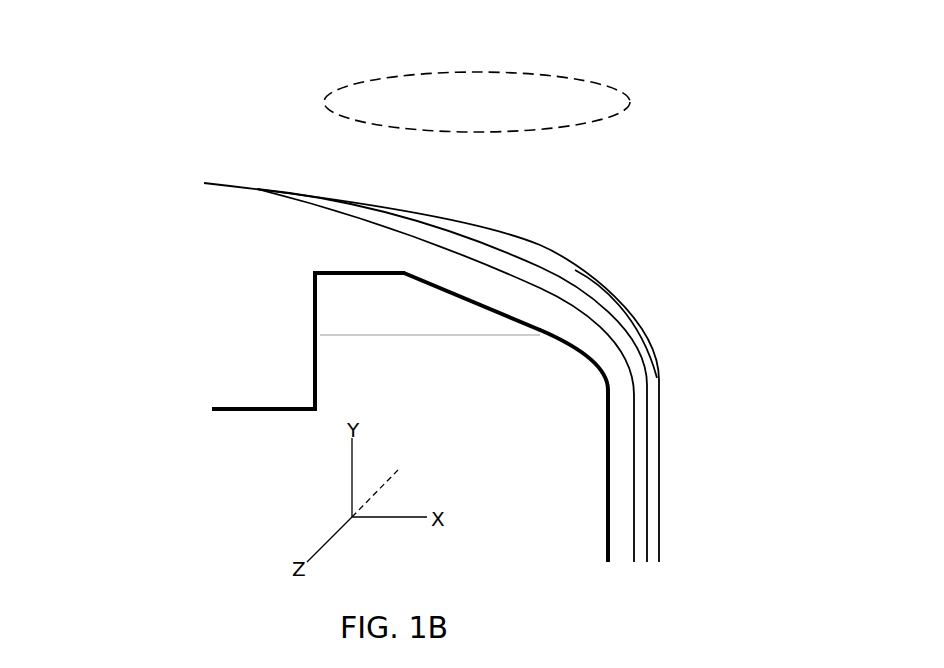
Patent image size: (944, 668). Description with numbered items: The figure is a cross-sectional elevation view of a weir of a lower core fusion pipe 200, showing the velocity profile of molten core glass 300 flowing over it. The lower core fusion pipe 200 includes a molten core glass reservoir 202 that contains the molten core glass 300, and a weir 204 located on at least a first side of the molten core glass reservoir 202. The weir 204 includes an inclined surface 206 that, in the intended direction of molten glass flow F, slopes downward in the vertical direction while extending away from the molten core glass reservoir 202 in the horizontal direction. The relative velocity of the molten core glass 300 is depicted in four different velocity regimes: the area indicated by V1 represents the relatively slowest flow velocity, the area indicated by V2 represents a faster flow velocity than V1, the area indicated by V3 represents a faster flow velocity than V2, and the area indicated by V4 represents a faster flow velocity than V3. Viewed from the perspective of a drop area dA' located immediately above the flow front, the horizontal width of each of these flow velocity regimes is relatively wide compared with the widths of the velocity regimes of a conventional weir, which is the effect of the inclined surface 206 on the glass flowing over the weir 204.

The lower core fusion pipe 200 is at (408, 416).
The molten core glass reservoir 202 is at (258, 411).
The weir 204 is at (517, 522).
The inclined surface 206 is at (488, 310).
The molten core glass 300 is at (406, 349).
The slowest flow velocity regime V1 is at (232, 197).
The second flow velocity regime V2 is at (380, 207).
The third flow velocity regime V3 is at (541, 241).
The fastest flow velocity regime V4 is at (647, 312).
The direction of molten glass flow F is at (390, 257).
The drop area dA' is at (514, 81).